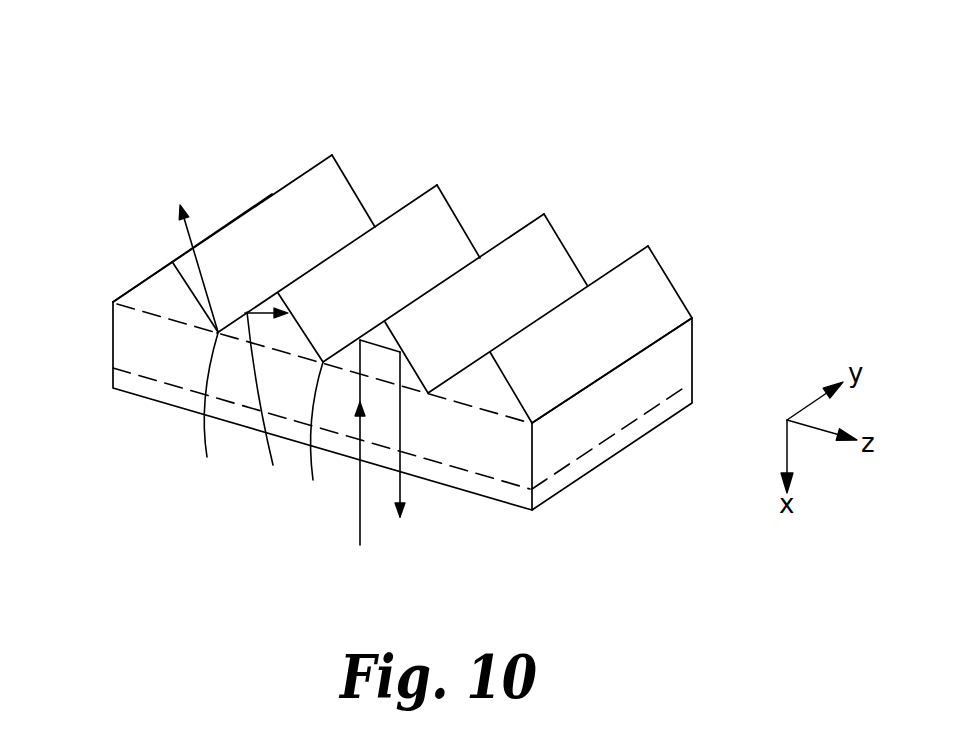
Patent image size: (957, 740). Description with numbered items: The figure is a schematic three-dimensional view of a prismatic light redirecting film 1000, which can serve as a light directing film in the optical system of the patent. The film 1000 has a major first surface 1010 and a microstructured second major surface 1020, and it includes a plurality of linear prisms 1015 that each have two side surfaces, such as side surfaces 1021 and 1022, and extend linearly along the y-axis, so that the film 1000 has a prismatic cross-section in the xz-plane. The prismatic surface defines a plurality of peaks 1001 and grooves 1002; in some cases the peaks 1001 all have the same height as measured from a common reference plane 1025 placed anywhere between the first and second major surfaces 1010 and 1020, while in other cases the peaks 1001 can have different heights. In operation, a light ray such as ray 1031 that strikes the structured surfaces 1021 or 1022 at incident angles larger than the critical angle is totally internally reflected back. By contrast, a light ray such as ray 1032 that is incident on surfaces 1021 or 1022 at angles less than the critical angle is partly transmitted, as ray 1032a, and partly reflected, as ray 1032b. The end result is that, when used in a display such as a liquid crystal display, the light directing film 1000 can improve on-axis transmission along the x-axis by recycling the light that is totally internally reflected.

The prismatic light redirecting film 1000 is at (160, 85).
The peaks 1001 is at (608, 267).
The grooves 1002 is at (264, 427).
The first major surface 1010 is at (158, 405).
The linear prisms 1015 is at (650, 292).
The microstructured second major surface 1020 is at (145, 273).
The side surface 1021 is at (348, 200).
The side surface 1022 is at (317, 163).
The common reference plane 1025 is at (620, 428).
The light ray 1031 is at (358, 530).
The light ray 1032 is at (268, 450).
The transmitted ray 1032a is at (202, 230).
The reflected ray 1032b is at (258, 306).